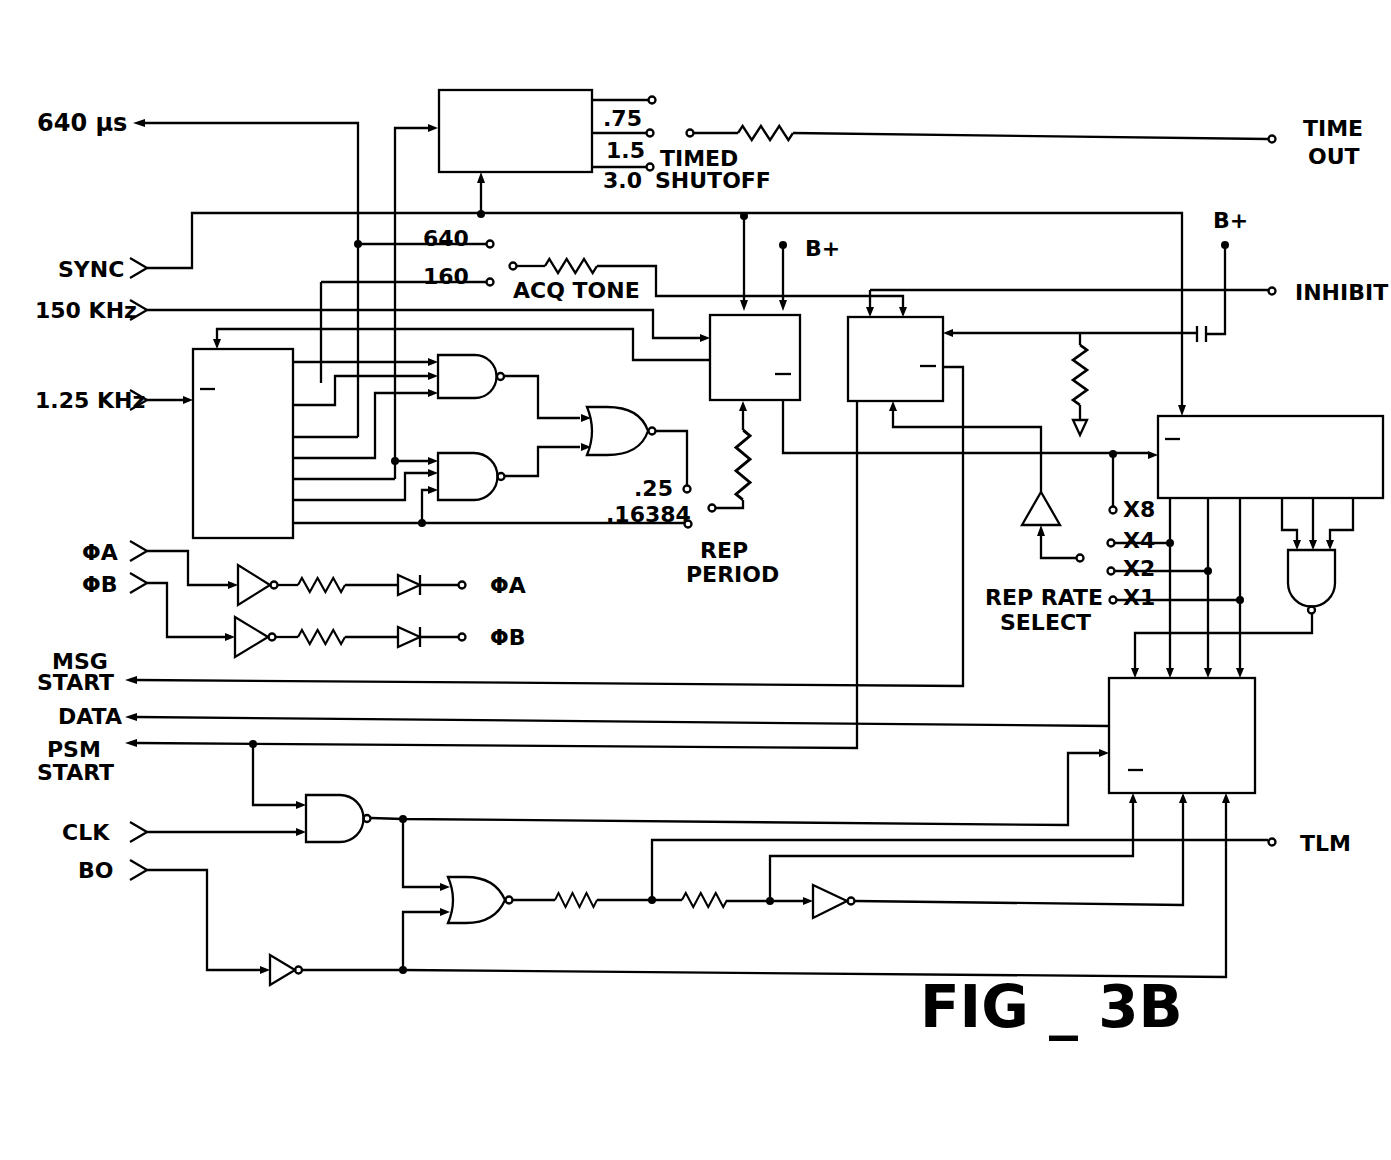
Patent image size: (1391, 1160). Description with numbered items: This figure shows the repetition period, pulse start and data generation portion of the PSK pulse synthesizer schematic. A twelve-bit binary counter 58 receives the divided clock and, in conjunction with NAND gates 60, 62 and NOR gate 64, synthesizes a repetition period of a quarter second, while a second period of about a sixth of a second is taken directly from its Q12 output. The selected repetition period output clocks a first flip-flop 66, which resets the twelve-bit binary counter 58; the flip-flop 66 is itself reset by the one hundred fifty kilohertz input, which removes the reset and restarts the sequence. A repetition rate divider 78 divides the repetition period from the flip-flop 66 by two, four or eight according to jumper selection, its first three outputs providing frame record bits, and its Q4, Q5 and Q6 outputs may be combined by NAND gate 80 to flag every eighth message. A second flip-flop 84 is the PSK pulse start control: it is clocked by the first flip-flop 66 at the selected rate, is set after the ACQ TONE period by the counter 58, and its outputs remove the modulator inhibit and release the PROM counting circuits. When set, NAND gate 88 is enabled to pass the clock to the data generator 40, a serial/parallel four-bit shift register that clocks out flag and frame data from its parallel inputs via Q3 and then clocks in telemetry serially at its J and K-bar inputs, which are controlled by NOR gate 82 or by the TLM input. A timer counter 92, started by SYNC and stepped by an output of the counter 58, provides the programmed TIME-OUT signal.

The data generator 40 is at (1257, 753).
The 12-bit binary counter 58 is at (193, 502).
The NAND gate 60 is at (492, 398).
The NAND gate 62 is at (495, 494).
The NOR gate 64 is at (607, 402).
The flip-flop 66 is at (708, 381).
The repetition rate divider 78 is at (1350, 416).
The NAND gate 80 is at (1332, 601).
The NOR gate 82 is at (502, 862).
The second flip-flop 84 is at (847, 386).
The NAND gate 88 is at (348, 795).
The timer counter 92 is at (438, 112).